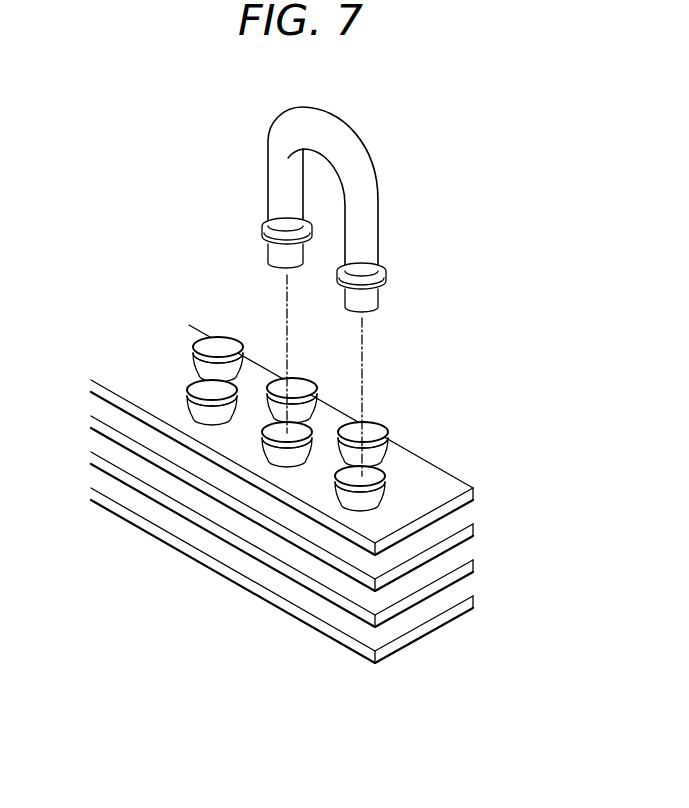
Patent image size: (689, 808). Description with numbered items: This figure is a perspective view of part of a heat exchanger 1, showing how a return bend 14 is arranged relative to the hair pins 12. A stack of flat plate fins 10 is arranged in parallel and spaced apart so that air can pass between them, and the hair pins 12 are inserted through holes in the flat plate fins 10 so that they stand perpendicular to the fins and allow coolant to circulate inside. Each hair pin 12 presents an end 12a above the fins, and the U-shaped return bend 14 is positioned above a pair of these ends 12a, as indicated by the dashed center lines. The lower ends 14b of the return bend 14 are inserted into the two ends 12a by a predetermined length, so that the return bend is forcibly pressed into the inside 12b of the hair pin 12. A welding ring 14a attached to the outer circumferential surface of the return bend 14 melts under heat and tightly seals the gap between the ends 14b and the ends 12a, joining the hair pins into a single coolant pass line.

The heat exchanger 1 is at (257, 515).
The flat plate fin 10 is at (158, 495).
The hair pin 12 is at (203, 390).
The end of hair pin 12a is at (386, 424).
The inside of hair pin 12b is at (393, 436).
The return bend 14 is at (357, 168).
The welding ring 14a is at (386, 276).
The end of return bend 14b is at (373, 298).